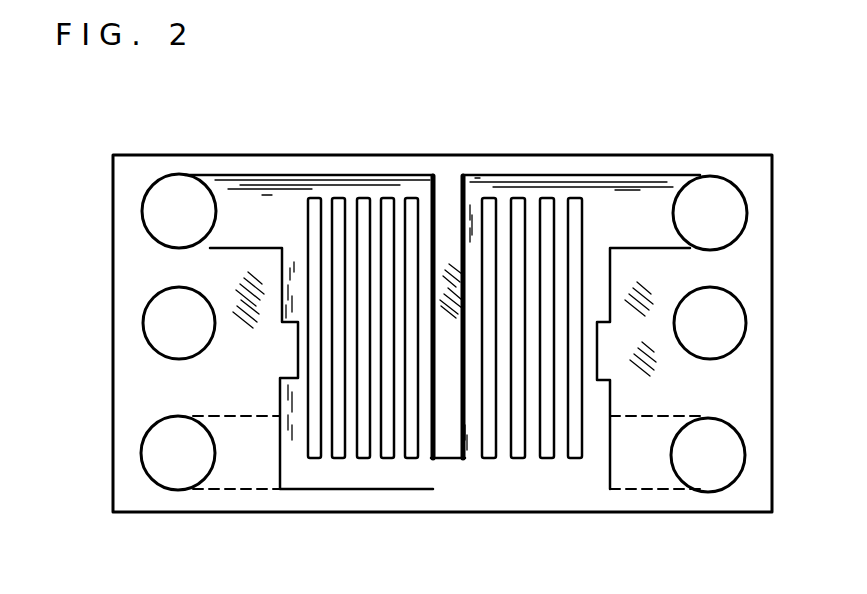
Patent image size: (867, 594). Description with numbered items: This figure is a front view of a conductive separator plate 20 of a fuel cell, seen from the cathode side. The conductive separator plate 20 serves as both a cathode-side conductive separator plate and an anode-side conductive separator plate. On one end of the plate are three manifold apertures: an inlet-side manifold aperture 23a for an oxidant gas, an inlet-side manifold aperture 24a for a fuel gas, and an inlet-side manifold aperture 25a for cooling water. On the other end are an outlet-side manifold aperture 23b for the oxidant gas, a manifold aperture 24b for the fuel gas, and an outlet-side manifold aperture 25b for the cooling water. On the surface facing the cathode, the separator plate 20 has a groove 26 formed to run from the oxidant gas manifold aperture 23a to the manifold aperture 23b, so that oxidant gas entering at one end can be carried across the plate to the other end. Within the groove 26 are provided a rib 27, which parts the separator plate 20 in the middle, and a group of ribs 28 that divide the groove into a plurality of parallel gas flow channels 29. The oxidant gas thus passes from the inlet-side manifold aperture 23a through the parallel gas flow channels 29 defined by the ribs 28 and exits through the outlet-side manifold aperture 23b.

The conductive separator plate 20 is at (430, 136).
The inlet-side manifold aperture for oxidant gas 23a is at (707, 207).
The outlet-side manifold aperture for oxidant gas 23b is at (180, 208).
The inlet-side manifold aperture for fuel gas 24a is at (707, 453).
The manifold aperture for fuel gas 24b is at (178, 452).
The inlet-side manifold aperture for cooling water 25a is at (718, 328).
The outlet-side manifold aperture for cooling water 25b is at (172, 330).
The groove 26 is at (252, 208).
The rib 27 is at (447, 442).
The group of ribs 28 is at (518, 205).
The gas flow channels 29 is at (503, 433).